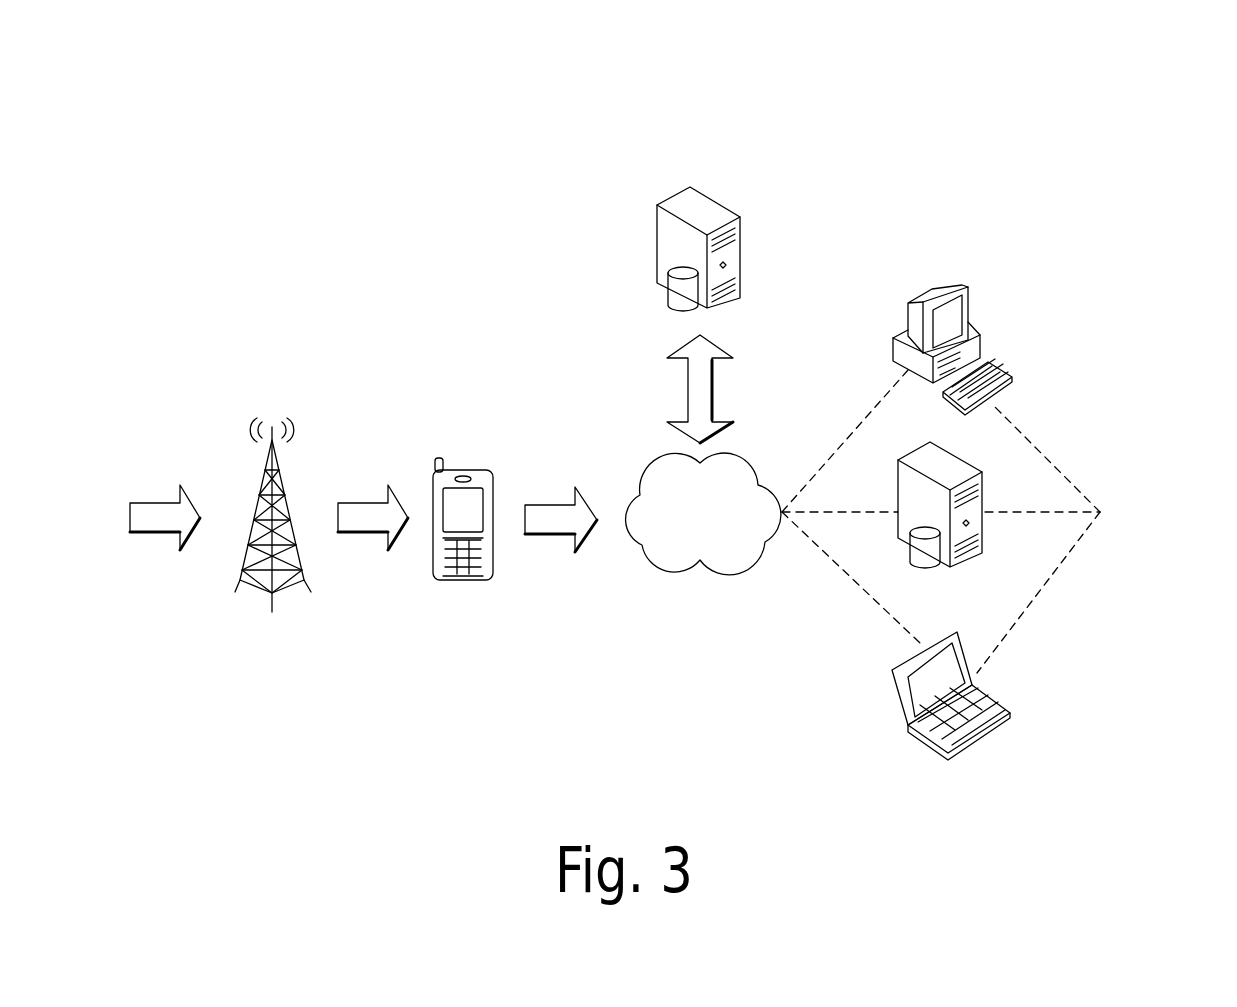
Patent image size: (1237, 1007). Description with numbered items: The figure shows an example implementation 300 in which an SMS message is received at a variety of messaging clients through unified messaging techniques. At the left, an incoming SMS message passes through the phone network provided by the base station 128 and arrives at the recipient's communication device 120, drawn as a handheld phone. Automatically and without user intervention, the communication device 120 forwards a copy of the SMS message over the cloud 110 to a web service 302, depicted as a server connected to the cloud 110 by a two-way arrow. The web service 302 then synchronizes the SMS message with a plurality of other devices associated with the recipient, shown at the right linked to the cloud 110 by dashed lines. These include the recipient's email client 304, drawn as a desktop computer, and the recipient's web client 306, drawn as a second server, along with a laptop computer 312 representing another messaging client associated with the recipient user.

The example implementation 300 is at (1122, 132).
The base station 128 is at (267, 475).
The communication device 120 is at (462, 473).
The cloud 110 is at (684, 534).
The web service 302 is at (673, 190).
The email client 304 is at (970, 285).
The web client 306 is at (982, 465).
The laptop computer 312 is at (1000, 693).